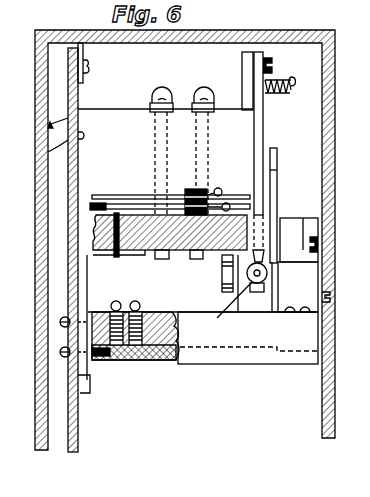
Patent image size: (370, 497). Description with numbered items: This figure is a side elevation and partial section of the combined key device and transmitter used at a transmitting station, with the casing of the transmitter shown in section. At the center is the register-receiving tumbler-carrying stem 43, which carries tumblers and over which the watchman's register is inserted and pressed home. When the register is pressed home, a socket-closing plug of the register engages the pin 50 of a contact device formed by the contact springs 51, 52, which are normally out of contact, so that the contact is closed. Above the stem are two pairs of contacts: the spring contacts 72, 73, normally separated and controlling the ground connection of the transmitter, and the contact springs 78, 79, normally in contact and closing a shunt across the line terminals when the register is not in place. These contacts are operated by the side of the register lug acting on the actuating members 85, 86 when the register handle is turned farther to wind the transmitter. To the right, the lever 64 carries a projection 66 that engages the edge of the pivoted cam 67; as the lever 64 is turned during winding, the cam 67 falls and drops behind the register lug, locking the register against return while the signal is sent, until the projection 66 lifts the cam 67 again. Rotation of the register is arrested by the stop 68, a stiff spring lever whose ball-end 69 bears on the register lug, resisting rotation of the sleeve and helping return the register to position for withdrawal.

The register-receiving tumbler-carrying stem 43 is at (203, 338).
The pin 50 is at (106, 254).
The contact spring 51 is at (128, 196).
The contact spring 52 is at (112, 203).
The lever 64 is at (275, 300).
The projection 66 is at (268, 270).
The pivoted cam 67 is at (277, 195).
The stop lever 68 is at (222, 282).
The ball-end 69 is at (222, 308).
The spring contact 72 is at (168, 99).
The spring contact 73 is at (156, 95).
The contact spring 78 is at (203, 95).
The contact spring 79 is at (212, 100).
The actuating member 85 is at (196, 259).
The actuating member 86 is at (158, 259).